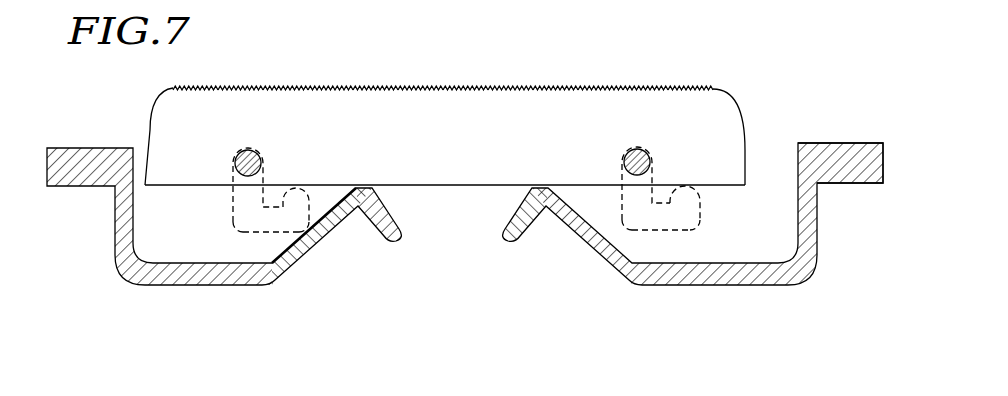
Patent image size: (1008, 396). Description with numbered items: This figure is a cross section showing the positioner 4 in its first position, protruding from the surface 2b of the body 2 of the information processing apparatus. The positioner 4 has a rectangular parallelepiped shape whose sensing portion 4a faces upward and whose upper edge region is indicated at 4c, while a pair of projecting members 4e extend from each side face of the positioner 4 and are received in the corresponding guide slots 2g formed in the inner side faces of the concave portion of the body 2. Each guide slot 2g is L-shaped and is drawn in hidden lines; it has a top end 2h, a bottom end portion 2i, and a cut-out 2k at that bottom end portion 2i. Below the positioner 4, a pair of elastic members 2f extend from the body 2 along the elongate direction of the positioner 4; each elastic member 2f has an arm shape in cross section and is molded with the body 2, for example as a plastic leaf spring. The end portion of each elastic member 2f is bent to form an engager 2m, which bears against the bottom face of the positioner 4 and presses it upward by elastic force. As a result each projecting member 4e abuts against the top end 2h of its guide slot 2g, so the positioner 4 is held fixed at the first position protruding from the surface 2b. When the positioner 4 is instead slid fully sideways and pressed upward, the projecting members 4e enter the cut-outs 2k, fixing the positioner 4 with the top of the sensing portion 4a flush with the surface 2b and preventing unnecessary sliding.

The body 2 is at (809, 142).
The surface 2b is at (871, 157).
The elastic members 2f is at (393, 240).
The guide slots 2g is at (265, 185).
The top end 2h is at (247, 150).
The bottom end portion 2i is at (302, 228).
The cut-out 2k is at (305, 190).
The engager 2m is at (358, 220).
The positioner 4 is at (480, 75).
The sensing portion 4a is at (530, 102).
The serrated edge 4c is at (395, 87).
The projecting members 4e is at (238, 160).